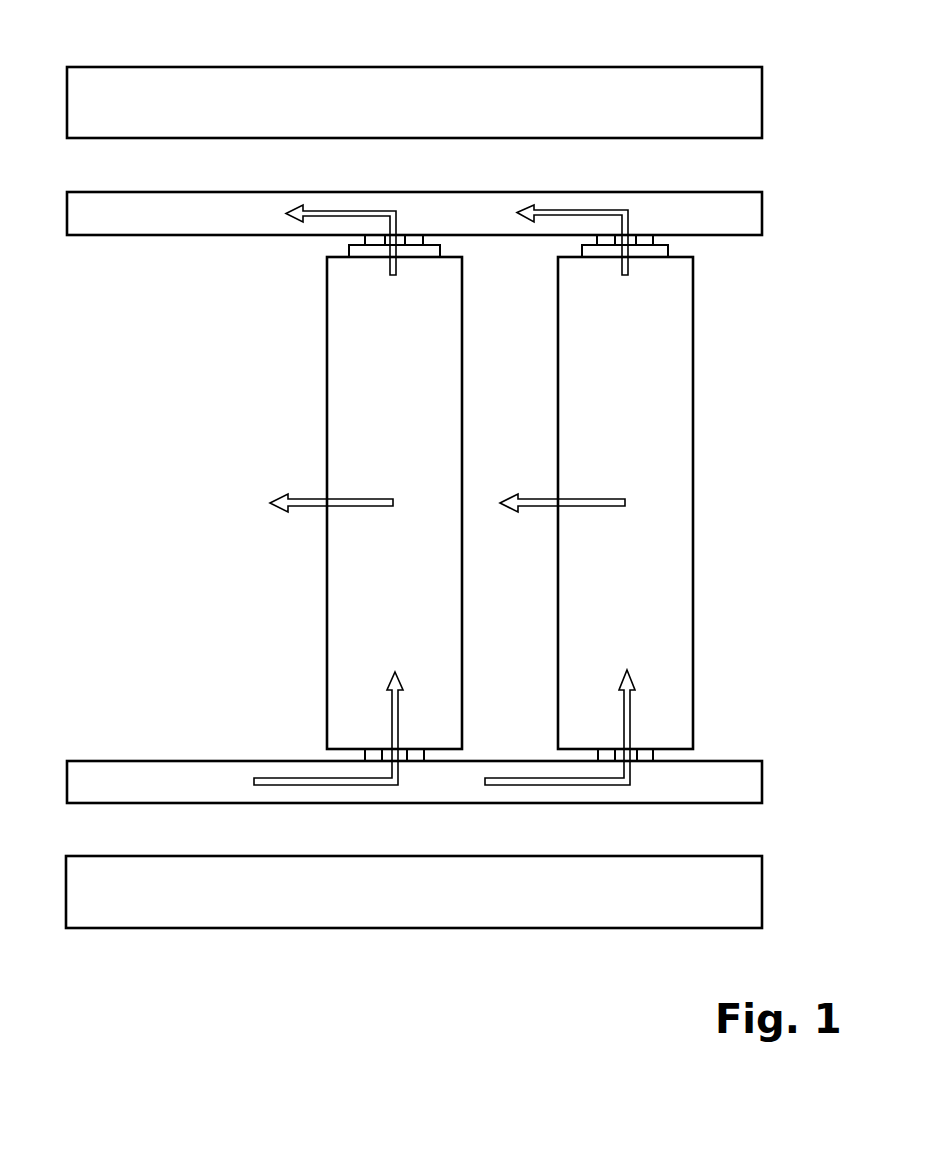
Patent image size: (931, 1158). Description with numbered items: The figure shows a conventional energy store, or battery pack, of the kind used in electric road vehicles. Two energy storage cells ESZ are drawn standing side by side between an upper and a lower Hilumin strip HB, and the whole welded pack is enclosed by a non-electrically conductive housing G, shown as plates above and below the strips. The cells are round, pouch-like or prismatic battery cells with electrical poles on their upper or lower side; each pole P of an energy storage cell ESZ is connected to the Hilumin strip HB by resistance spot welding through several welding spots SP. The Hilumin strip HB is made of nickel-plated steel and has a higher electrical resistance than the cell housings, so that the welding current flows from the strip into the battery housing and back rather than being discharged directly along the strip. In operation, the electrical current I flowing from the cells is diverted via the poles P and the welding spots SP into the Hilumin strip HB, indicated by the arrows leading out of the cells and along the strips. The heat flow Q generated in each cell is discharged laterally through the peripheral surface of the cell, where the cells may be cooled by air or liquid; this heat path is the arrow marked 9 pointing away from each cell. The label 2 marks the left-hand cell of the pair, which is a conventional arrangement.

The housing G is at (192, 75).
The Hilumin strip HB is at (147, 224).
The energy storage cells ESZ is at (524, 503).
The energy storage cell 2 is at (350, 353).
The pole P is at (423, 252).
The welding spots SP is at (373, 240).
The electrical current I is at (318, 213).
The heat flow Q is at (447, 514).
The heat dissipation path 9 is at (297, 516).